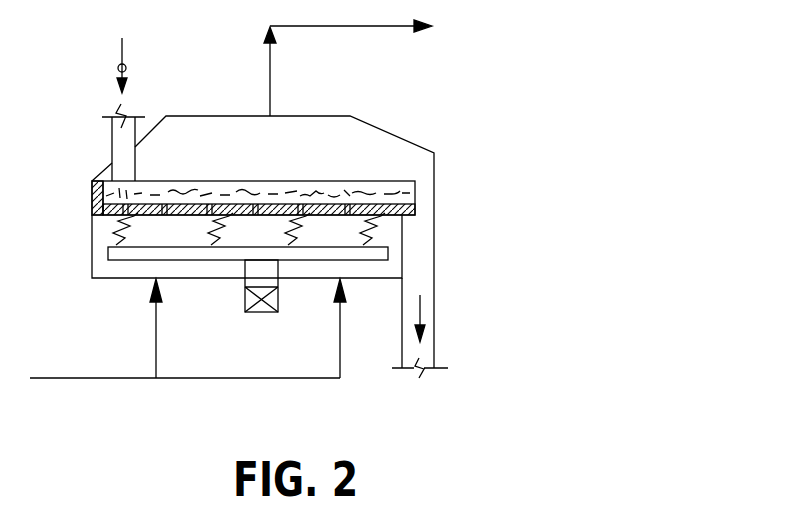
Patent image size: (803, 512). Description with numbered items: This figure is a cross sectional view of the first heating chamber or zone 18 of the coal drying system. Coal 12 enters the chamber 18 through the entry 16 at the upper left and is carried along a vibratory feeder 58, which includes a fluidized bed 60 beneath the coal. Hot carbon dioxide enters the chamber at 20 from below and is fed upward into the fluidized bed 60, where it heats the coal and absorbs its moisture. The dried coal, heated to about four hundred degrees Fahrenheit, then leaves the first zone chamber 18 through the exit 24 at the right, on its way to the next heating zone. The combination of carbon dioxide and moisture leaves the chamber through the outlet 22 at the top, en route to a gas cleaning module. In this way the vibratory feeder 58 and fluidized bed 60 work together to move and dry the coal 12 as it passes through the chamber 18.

The coal 12 is at (245, 183).
The coal entry 16 is at (128, 68).
The first heating chamber 18 is at (428, 95).
The hot carbon dioxide entry 20 is at (156, 341).
The carbon dioxide and moisture exit 22 is at (270, 103).
The dried coal exit 24 is at (432, 258).
The vibratory feeder 58 is at (123, 255).
The fluidized bed 60 is at (381, 190).